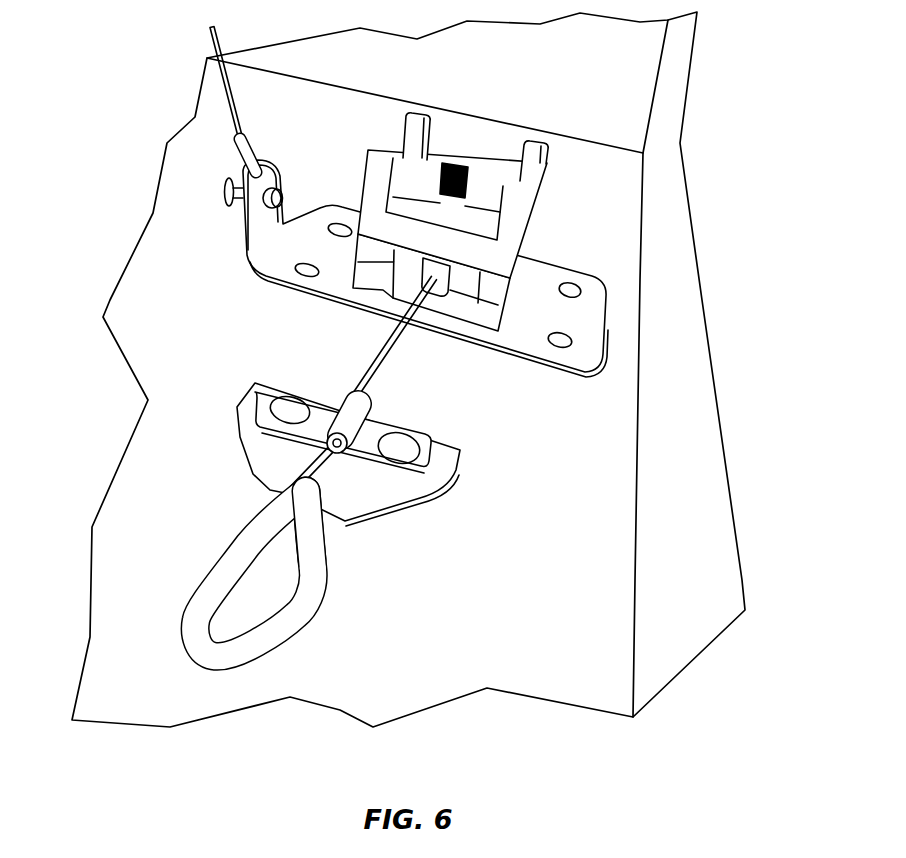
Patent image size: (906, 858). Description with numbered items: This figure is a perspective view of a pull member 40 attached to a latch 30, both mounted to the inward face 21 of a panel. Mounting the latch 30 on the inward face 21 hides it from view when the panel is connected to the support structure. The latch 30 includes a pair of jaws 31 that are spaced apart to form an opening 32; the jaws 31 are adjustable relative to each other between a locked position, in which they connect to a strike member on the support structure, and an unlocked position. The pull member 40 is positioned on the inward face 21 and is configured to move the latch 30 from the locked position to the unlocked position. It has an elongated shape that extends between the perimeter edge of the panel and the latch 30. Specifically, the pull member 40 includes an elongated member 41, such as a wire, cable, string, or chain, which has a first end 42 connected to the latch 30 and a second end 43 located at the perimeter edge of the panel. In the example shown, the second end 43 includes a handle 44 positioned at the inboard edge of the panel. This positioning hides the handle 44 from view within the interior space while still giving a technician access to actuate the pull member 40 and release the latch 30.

The inward face 21 is at (600, 433).
The latch 30 is at (456, 180).
The jaws 31 is at (516, 204).
The opening 32 is at (378, 136).
The pull member 40 is at (225, 282).
The elongated member 41 is at (393, 355).
The first end 42 is at (430, 278).
The second end 43 is at (325, 545).
The handle 44 is at (223, 560).